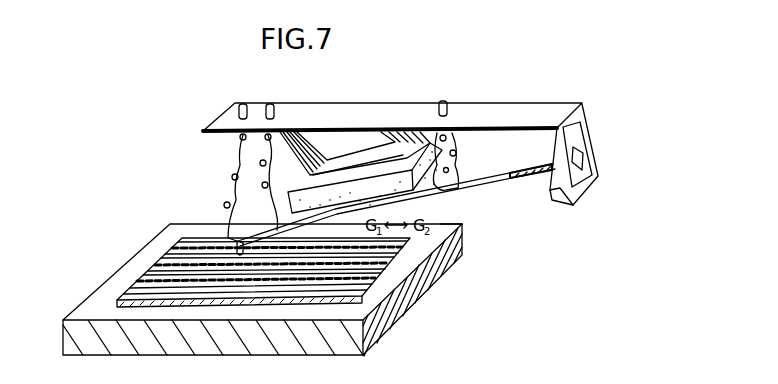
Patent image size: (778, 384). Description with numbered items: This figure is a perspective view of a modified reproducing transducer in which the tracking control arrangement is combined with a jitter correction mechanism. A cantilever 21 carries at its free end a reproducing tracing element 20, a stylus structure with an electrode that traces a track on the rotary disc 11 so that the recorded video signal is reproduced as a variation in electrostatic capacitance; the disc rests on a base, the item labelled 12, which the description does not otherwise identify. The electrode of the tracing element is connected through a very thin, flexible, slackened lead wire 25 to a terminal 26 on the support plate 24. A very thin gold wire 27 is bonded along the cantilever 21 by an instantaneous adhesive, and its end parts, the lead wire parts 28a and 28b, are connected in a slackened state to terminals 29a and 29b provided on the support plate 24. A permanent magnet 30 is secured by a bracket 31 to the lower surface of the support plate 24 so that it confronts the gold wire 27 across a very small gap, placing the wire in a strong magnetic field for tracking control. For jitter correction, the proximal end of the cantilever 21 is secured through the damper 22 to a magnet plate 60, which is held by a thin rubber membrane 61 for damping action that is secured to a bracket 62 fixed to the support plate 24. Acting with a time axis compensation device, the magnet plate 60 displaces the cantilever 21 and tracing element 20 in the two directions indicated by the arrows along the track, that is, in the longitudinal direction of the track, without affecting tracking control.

The rotary disc 11 is at (137, 280).
The base table 12 is at (430, 287).
The reproducing tracing element 20 is at (238, 238).
The cantilever 21 is at (497, 183).
The damper 22 is at (540, 180).
The support plate 24 is at (515, 110).
The lead wire 25 is at (242, 143).
The terminal 26 is at (242, 103).
The gold wire 27 is at (443, 183).
The lead wire part 28a is at (457, 167).
The lead wire part 28b is at (260, 163).
The terminal 29a is at (443, 100).
The terminal 29b is at (270, 103).
The permanent magnet 30 is at (288, 200).
The bracket 31 is at (352, 152).
The magnet plate 60 is at (585, 157).
The thin rubber membrane 61 is at (573, 132).
The bracket 62 is at (587, 187).